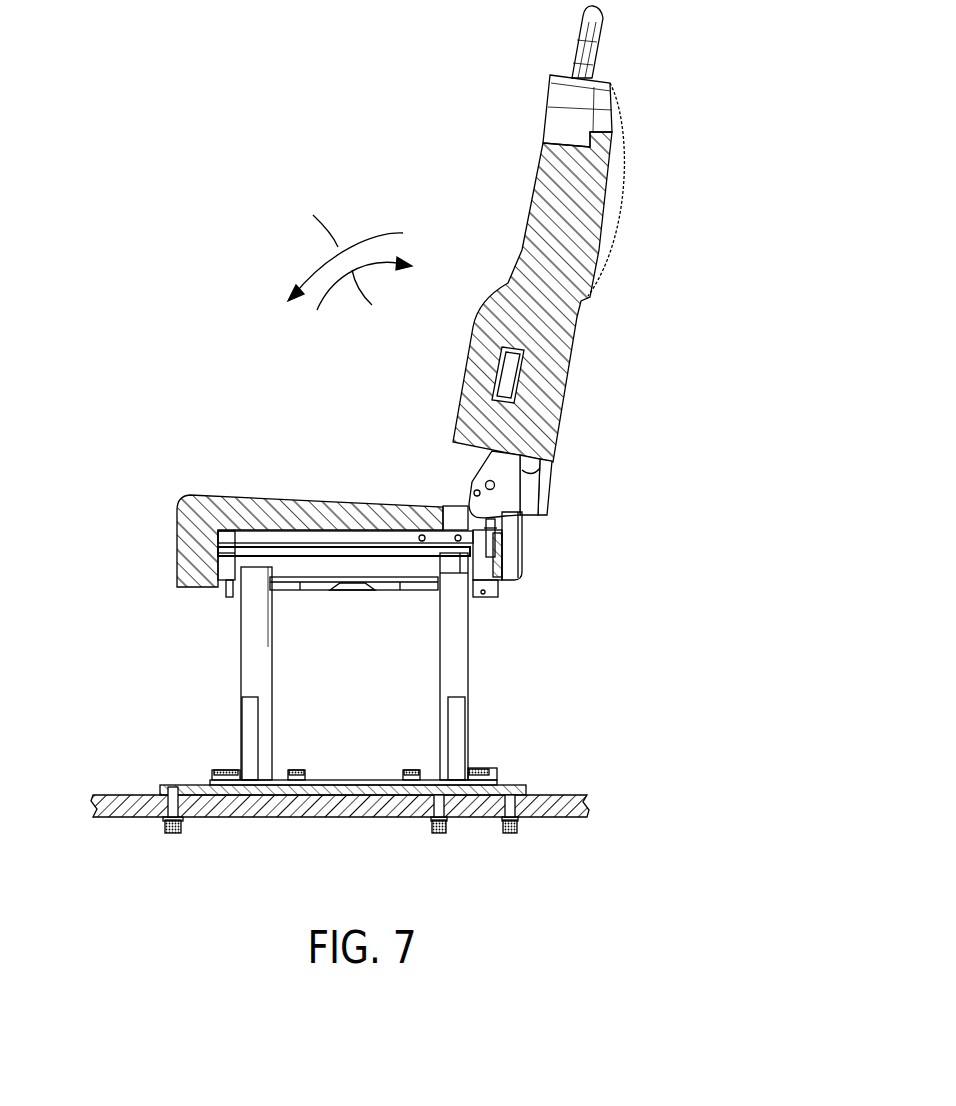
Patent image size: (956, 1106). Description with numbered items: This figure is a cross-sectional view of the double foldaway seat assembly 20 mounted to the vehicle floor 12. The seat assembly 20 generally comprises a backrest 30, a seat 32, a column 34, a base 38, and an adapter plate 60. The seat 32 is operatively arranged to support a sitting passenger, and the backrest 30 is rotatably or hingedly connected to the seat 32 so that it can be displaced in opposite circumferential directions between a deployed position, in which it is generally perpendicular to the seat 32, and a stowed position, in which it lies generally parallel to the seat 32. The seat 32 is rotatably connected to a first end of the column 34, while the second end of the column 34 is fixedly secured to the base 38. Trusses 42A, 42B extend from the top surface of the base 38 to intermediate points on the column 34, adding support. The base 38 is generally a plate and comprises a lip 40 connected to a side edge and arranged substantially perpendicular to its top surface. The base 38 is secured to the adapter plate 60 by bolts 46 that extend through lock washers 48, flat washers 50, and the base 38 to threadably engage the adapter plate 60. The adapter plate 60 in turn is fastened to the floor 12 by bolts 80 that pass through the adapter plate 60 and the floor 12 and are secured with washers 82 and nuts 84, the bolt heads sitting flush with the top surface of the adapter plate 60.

The double foldaway seat assembly 20 is at (716, 83).
The backrest 30 is at (607, 101).
The seat 32 is at (245, 512).
The column 34 is at (346, 666).
The base 38 is at (345, 778).
The lip 40 is at (497, 773).
The truss 42A is at (250, 722).
The truss 42B is at (458, 722).
The bolt 46 is at (237, 776).
The lock washer 48 is at (191, 746).
The washer 50 is at (245, 778).
The adapter plate 60 is at (526, 790).
The bolt 80 is at (162, 818).
The washer 82 is at (168, 822).
The nut 84 is at (180, 823).
The floor 12 is at (118, 813).